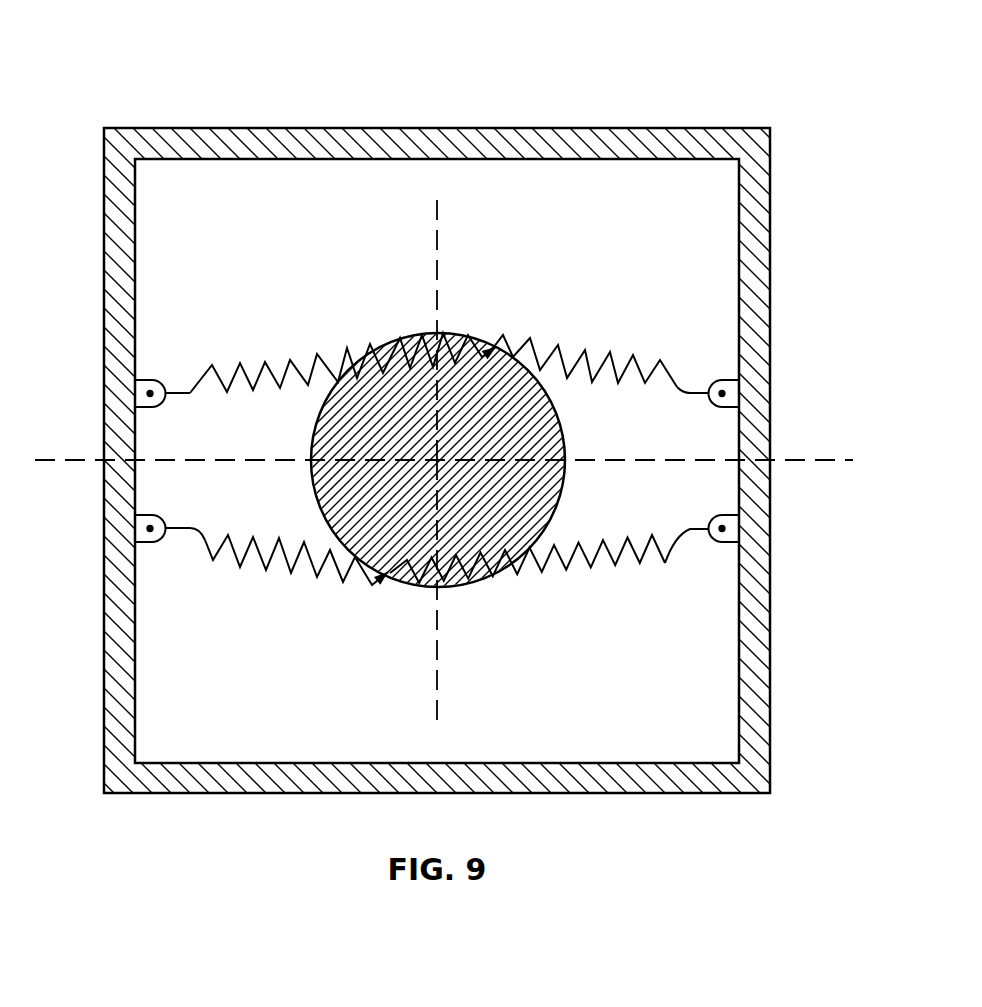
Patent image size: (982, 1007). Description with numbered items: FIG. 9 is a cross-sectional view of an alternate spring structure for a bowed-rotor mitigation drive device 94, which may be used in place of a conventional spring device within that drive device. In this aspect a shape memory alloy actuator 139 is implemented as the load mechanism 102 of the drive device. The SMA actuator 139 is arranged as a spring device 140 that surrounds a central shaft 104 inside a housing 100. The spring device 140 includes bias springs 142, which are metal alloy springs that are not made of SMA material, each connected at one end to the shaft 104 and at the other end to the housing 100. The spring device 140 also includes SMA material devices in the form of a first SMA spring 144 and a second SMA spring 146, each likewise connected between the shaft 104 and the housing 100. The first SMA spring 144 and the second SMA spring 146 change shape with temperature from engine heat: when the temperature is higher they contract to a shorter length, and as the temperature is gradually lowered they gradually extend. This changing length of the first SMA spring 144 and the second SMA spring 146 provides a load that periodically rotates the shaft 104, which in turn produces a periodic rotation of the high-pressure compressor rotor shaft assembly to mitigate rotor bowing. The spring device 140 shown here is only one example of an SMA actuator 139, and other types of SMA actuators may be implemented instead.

The bowed-rotor mitigation drive device 94 is at (472, 98).
The housing 100 is at (758, 247).
The load mechanism 102 is at (710, 332).
The shaft 104 is at (437, 548).
The shape memory alloy (SMA) actuator 139 is at (538, 203).
The spring device 140 is at (537, 687).
The bias springs 142 is at (563, 330).
The first SMA spring 144 is at (575, 580).
The second SMA spring 146 is at (352, 328).